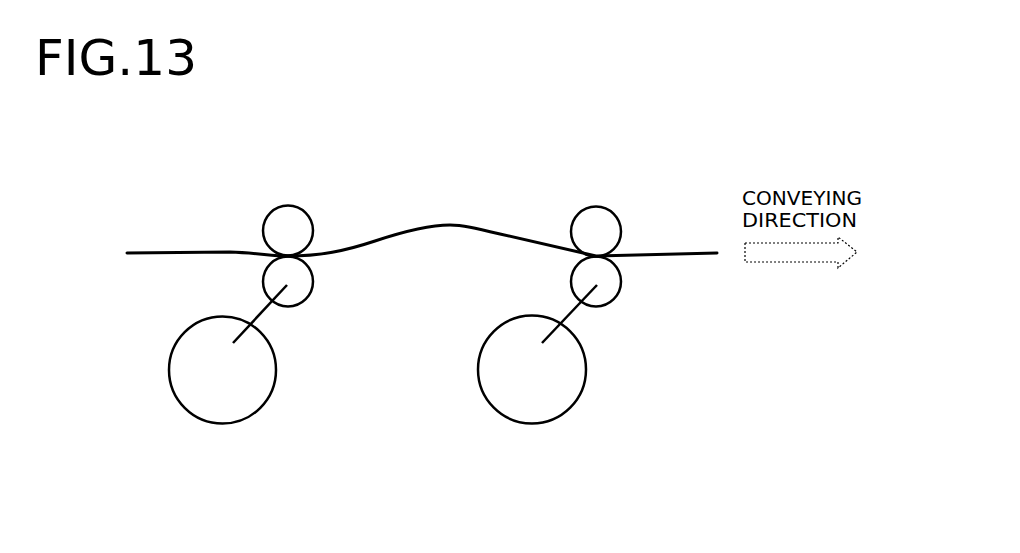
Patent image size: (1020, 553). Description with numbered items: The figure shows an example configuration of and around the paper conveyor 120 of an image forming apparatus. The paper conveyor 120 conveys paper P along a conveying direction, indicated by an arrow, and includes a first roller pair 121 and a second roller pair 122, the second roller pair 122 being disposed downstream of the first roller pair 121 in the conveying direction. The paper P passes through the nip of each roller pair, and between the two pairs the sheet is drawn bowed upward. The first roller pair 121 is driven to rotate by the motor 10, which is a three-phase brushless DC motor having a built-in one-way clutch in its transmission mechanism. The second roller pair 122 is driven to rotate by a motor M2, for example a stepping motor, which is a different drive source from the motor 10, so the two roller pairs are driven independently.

The paper P is at (158, 252).
The paper conveyor 120 is at (463, 184).
The first roller pair 121 is at (292, 215).
The second roller pair 122 is at (600, 217).
The motor 10 is at (218, 425).
The motor M2 is at (527, 425).